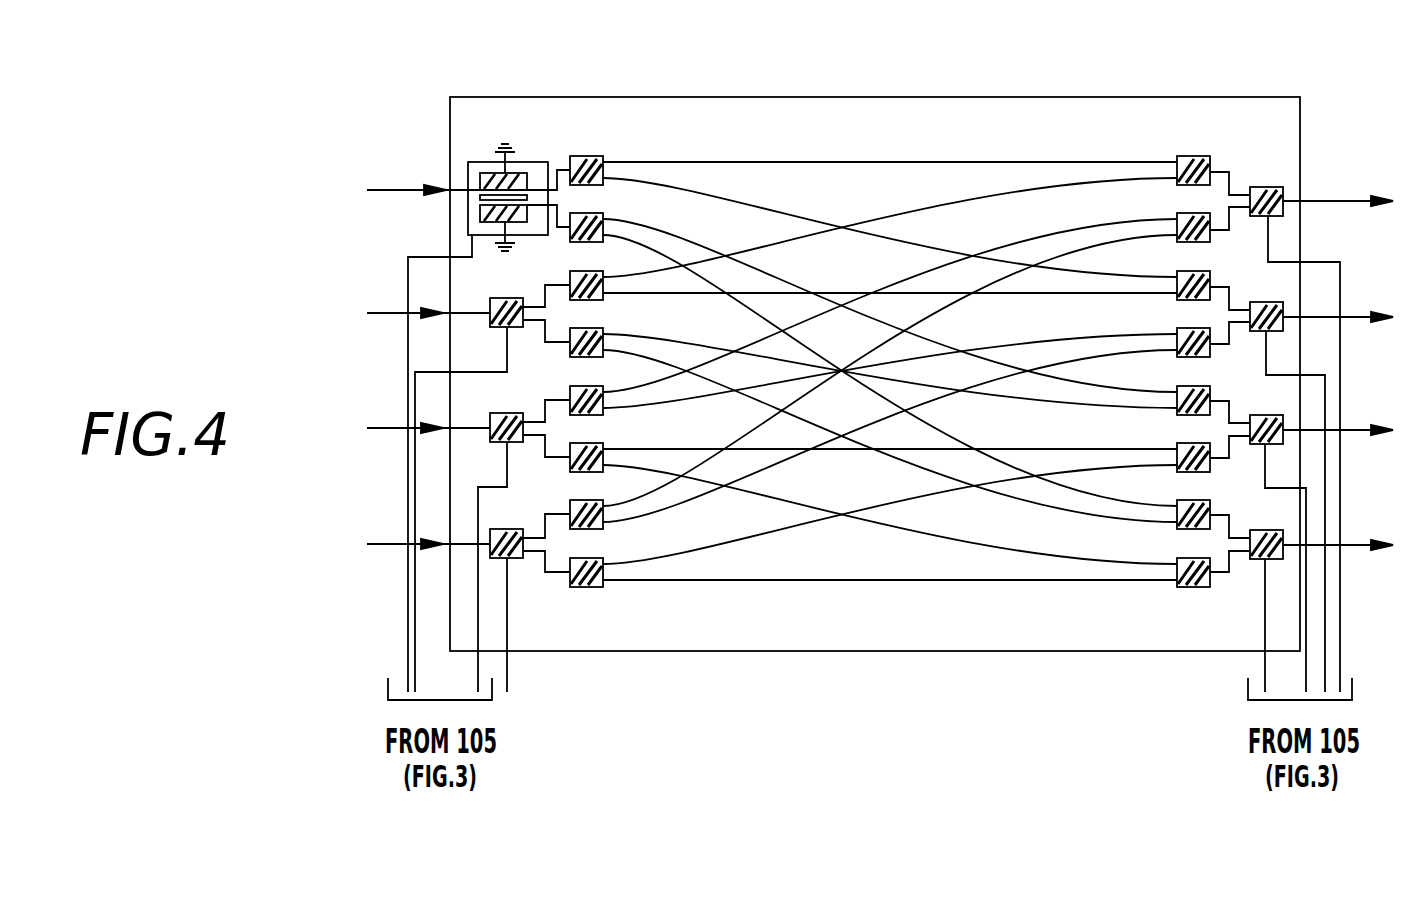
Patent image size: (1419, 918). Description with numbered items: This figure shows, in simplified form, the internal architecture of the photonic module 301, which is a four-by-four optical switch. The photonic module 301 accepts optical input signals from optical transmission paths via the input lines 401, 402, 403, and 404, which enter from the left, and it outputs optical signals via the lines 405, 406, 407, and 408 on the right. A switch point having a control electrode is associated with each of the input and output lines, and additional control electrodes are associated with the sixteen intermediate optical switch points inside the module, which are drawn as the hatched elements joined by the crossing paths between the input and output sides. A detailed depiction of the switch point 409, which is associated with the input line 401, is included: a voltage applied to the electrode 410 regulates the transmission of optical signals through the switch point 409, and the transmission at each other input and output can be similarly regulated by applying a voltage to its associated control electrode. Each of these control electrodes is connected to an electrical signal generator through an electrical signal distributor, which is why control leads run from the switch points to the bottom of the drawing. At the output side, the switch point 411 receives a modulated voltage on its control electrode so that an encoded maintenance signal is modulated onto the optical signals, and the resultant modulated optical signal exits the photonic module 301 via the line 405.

The photonic module 301 is at (834, 108).
The input line 401 is at (393, 190).
The input line 402 is at (393, 313).
The input line 403 is at (393, 428).
The input line 404 is at (393, 544).
The output line 405 is at (1333, 200).
The output line 406 is at (1360, 317).
The output line 407 is at (1351, 430).
The output line 408 is at (1351, 545).
The switch point 409 is at (532, 165).
The electrode 410 is at (470, 222).
The switch point 411 is at (1284, 209).